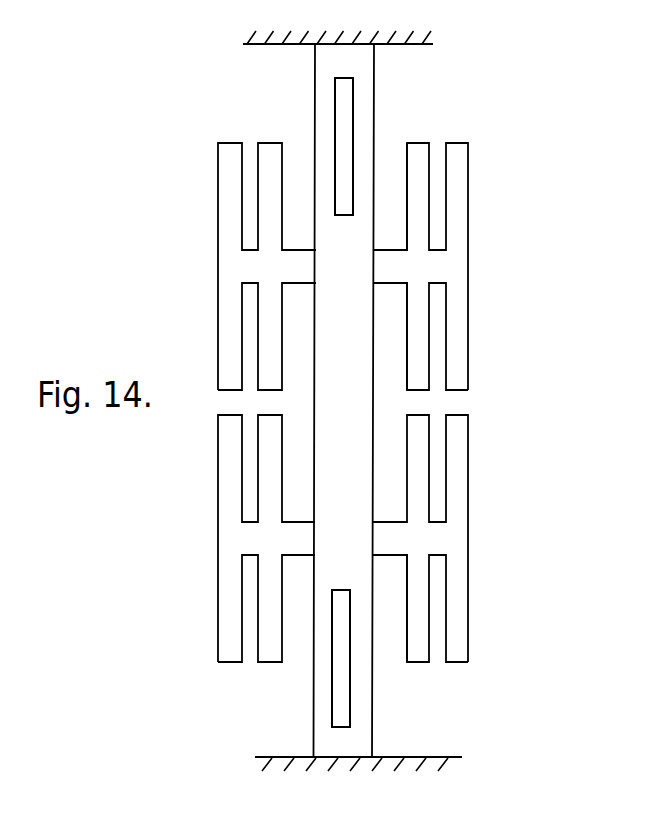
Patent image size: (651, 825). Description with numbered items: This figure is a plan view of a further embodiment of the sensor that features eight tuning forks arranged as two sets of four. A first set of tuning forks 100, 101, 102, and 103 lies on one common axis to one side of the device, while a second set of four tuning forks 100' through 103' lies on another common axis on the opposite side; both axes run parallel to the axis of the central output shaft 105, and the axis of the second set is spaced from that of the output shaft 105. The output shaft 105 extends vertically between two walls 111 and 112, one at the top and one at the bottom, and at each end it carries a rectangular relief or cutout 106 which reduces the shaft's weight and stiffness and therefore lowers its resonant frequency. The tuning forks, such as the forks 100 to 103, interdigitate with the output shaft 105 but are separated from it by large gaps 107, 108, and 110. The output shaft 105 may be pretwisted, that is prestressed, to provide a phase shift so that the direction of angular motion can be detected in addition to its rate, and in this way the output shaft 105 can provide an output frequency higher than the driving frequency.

The tuning fork 100 is at (459, 266).
The tuning fork 100' is at (234, 266).
The tuning fork 101 is at (457, 335).
The tuning fork 102 is at (461, 472).
The tuning fork 103 is at (457, 608).
The tuning fork 103' is at (227, 538).
The output shaft 105 is at (315, 64).
The rectangular relief or cutout 106 is at (350, 116).
The gap 107 is at (406, 192).
The gap 108 is at (406, 341).
The gap 110 is at (406, 621).
The wall 111 is at (420, 42).
The wall 112 is at (436, 757).